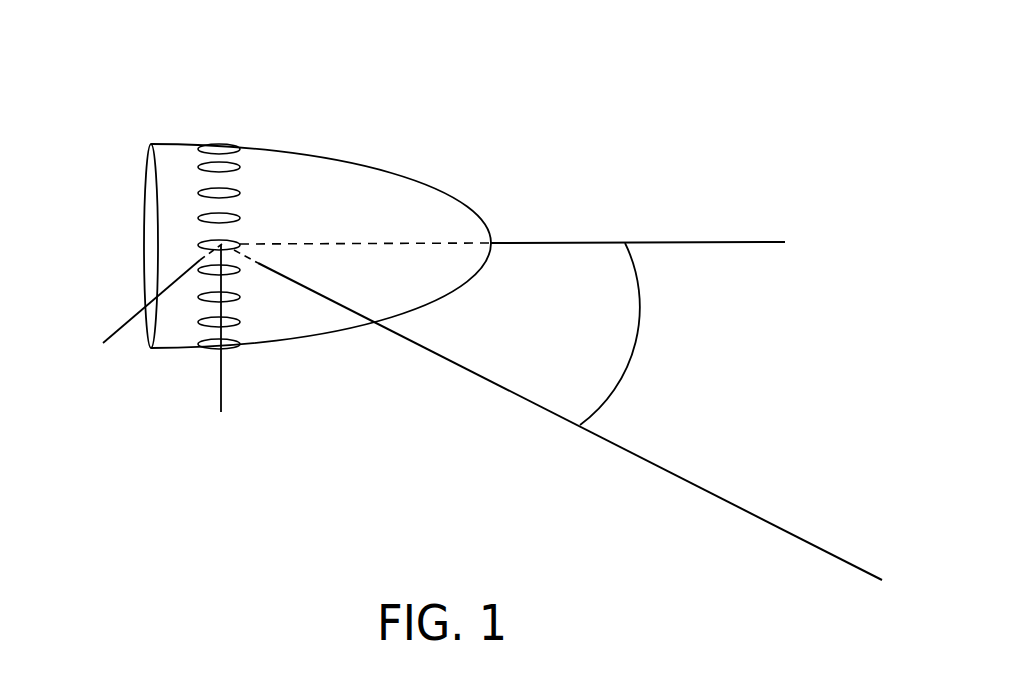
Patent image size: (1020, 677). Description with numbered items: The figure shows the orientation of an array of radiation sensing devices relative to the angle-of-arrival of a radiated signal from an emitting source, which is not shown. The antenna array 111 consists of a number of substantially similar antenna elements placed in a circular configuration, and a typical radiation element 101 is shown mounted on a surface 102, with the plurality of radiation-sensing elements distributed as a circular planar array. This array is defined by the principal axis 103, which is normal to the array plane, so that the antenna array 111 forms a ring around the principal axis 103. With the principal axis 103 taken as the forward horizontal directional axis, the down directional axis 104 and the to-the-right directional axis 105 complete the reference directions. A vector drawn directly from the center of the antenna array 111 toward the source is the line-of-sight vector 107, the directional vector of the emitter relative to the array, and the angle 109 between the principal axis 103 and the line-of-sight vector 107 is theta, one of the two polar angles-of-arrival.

The antenna array 111 is at (238, 98).
The radiation element 101 is at (198, 167).
The surface 102 is at (303, 152).
The principal axis 103 is at (670, 243).
The down directional axis 104 is at (220, 400).
The to the right directional axis 105 is at (122, 322).
The line-of-sight vector 107 is at (720, 497).
The angle 109 is at (640, 345).